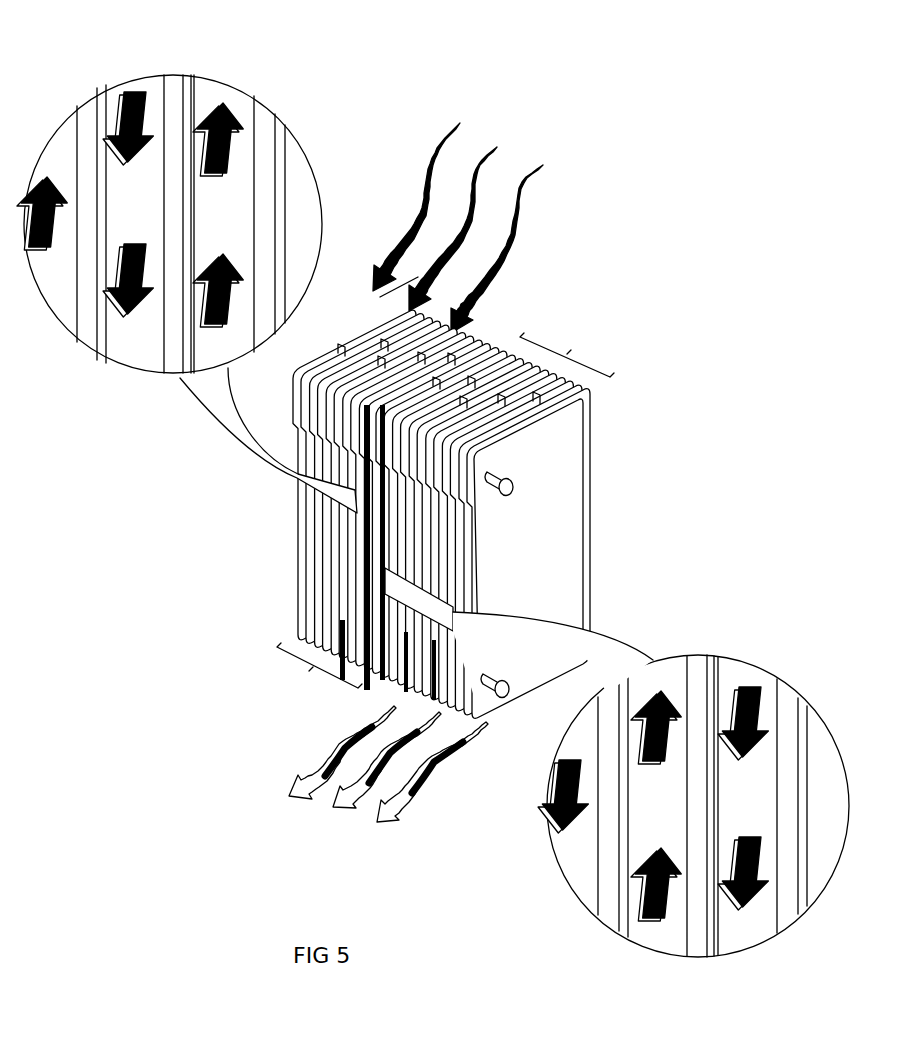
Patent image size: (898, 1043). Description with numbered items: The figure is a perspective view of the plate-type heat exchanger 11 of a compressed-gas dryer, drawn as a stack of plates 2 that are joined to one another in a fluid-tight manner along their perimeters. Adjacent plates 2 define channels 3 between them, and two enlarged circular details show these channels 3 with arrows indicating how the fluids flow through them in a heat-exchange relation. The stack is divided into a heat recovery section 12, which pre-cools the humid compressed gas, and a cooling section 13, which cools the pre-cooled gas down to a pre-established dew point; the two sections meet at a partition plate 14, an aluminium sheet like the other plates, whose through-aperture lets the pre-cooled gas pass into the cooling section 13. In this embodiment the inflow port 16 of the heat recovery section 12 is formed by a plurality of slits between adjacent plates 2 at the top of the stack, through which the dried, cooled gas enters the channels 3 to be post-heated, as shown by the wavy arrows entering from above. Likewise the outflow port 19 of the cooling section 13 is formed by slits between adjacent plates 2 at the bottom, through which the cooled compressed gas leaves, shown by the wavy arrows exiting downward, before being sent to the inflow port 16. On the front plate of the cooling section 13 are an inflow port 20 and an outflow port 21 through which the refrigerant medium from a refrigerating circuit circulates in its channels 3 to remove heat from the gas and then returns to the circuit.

The plates 2 is at (565, 478).
The channels 3 is at (65, 287).
The multi-circuit heat exchanger 11 is at (615, 258).
The heat recovery section 12 is at (319, 667).
The cooling section 13 is at (567, 353).
The partition plate 14 is at (487, 331).
The inflow port 16 is at (400, 390).
The outflow port 19 is at (487, 720).
The inflow port 20 is at (505, 700).
The outflow port 21 is at (513, 493).